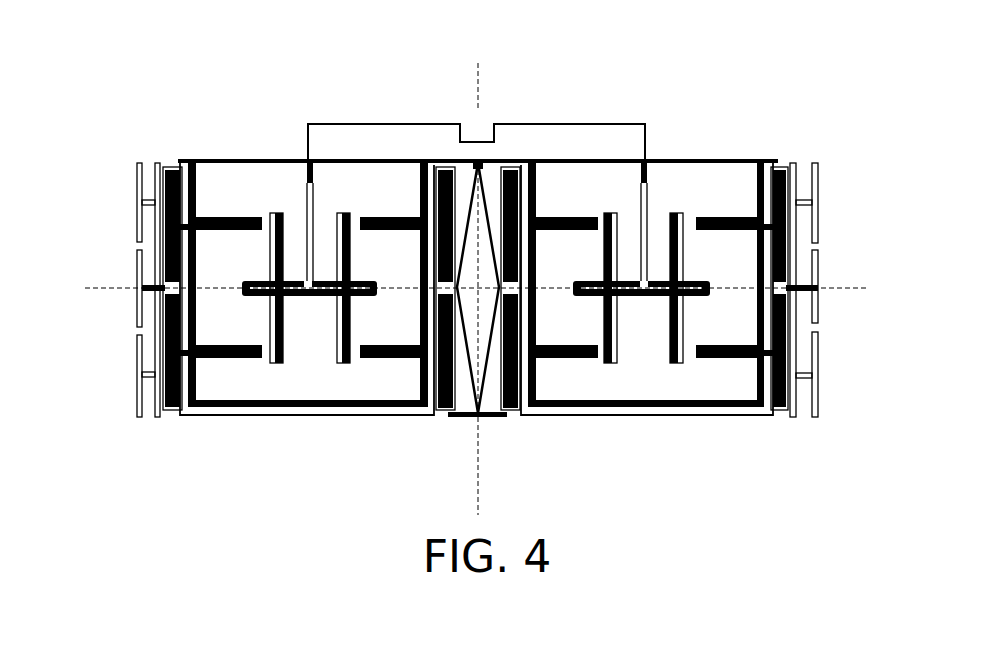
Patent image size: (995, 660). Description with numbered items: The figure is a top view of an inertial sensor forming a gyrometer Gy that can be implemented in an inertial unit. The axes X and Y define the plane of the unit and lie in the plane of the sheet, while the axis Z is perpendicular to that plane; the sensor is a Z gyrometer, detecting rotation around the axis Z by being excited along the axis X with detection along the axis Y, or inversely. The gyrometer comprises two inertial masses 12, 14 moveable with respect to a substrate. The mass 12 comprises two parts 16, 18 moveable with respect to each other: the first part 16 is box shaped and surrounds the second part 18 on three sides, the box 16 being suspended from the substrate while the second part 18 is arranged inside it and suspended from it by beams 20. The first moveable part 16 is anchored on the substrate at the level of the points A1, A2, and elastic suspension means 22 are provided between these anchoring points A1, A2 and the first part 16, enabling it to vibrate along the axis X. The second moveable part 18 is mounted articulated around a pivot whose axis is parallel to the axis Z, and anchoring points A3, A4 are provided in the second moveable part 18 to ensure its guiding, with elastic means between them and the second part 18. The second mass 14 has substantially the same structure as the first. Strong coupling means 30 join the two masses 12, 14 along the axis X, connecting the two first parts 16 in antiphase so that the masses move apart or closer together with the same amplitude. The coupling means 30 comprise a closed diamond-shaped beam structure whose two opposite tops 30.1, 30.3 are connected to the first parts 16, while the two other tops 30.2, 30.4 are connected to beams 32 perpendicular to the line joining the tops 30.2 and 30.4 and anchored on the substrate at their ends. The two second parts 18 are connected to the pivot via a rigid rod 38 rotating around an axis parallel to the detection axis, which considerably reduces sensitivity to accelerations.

The inertial mass 12 is at (216, 158).
The second inertial mass 14 is at (740, 155).
The first part 16 is at (200, 415).
The second part 18 is at (303, 390).
The beams 20 is at (238, 217).
The elastic suspension means 22 is at (170, 158).
The strong coupling means 30 is at (506, 291).
The top of diamond structure 30.1 is at (438, 327).
The top of diamond structure 30.2 is at (484, 161).
The top of diamond structure 30.3 is at (518, 322).
The top of diamond structure 30.4 is at (484, 417).
The beams 32 is at (494, 161).
The rigid rod 38 is at (320, 130).
The anchoring point A1 is at (168, 226).
The anchoring point A2 is at (168, 352).
The anchoring point A3 is at (248, 294).
The anchoring point A4 is at (340, 160).
The axis X is at (853, 290).
The axis Y is at (478, 72).
The axis Z is at (479, 285).
The gyrometer Gy is at (612, 95).